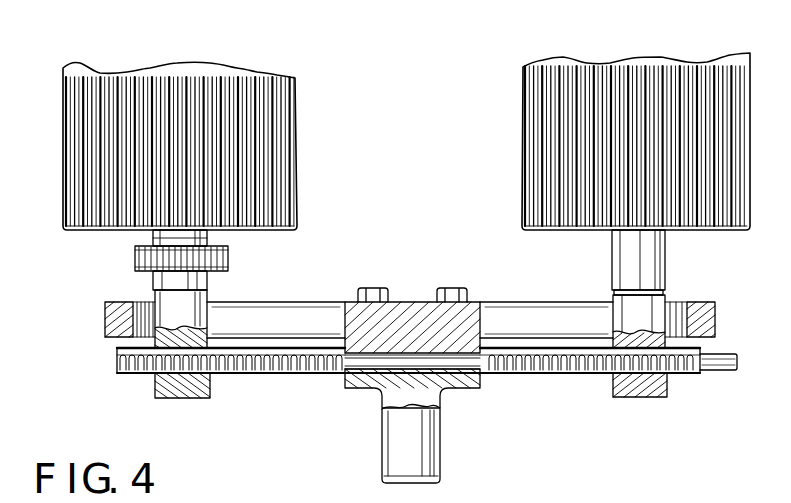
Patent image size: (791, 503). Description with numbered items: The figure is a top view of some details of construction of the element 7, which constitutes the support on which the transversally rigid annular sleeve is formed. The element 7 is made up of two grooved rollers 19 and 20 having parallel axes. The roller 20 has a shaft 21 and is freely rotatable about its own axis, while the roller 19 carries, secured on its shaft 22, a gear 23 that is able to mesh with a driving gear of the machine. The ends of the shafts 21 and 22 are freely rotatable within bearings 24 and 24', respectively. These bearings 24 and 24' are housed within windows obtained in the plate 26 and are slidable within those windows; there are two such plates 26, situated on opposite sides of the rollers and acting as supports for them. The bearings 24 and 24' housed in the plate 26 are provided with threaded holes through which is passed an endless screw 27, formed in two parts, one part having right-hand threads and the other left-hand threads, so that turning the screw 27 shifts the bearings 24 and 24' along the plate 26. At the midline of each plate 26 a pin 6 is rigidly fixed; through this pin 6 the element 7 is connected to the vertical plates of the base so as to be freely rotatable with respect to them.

The pin 6 is at (427, 453).
The element 7 is at (399, 277).
The grooved roller 19 is at (297, 100).
The grooved roller 20 is at (530, 77).
The shaft 21 is at (630, 263).
The shaft 22 is at (207, 237).
The gear 23 is at (135, 257).
The bearing 24 is at (640, 393).
The bearing 24' is at (198, 362).
The plate 26 is at (107, 325).
The endless screw 27 is at (279, 374).